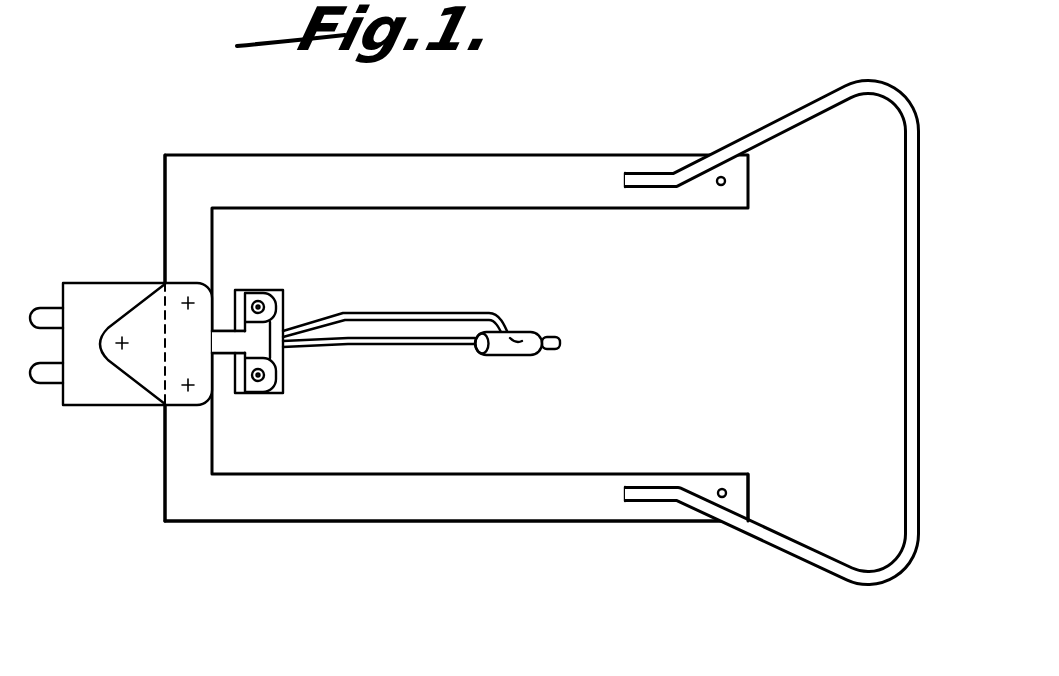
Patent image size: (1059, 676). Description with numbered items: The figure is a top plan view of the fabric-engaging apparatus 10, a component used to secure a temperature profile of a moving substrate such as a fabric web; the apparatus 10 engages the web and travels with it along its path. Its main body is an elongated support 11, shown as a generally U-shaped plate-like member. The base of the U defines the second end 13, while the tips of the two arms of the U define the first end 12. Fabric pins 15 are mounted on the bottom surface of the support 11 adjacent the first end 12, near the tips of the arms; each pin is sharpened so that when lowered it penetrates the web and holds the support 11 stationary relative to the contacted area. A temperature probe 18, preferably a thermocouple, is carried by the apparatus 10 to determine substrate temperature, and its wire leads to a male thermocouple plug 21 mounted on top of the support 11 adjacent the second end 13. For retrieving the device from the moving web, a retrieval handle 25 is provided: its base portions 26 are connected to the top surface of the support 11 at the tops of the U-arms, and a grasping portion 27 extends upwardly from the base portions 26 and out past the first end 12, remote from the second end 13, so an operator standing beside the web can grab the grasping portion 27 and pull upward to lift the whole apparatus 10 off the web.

The apparatus 10 is at (390, 542).
The elongated support 11 is at (256, 524).
The first end 12 is at (748, 493).
The second end 13 is at (165, 481).
The fabric pins 15 is at (726, 182).
The temperature probe 18 is at (525, 318).
The male thermocouple plug 21 is at (140, 259).
The retrieval handle 25 is at (918, 86).
The base portions 26 is at (658, 188).
The grasping portion 27 is at (918, 288).